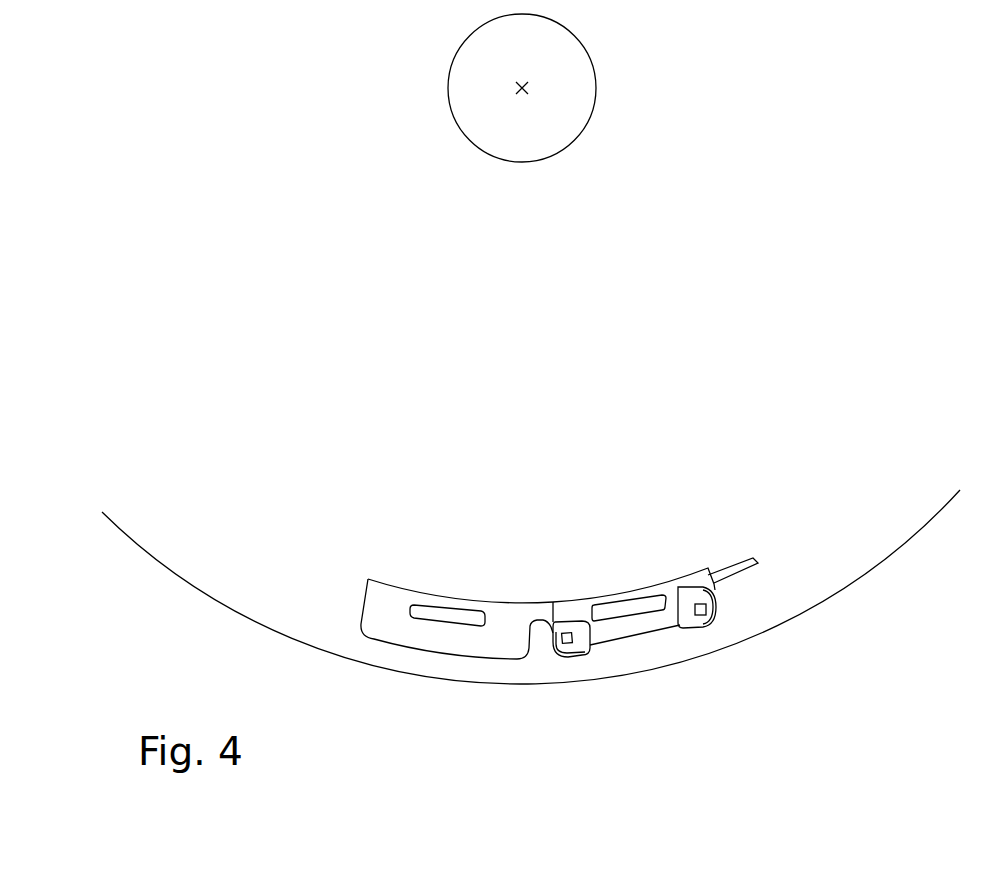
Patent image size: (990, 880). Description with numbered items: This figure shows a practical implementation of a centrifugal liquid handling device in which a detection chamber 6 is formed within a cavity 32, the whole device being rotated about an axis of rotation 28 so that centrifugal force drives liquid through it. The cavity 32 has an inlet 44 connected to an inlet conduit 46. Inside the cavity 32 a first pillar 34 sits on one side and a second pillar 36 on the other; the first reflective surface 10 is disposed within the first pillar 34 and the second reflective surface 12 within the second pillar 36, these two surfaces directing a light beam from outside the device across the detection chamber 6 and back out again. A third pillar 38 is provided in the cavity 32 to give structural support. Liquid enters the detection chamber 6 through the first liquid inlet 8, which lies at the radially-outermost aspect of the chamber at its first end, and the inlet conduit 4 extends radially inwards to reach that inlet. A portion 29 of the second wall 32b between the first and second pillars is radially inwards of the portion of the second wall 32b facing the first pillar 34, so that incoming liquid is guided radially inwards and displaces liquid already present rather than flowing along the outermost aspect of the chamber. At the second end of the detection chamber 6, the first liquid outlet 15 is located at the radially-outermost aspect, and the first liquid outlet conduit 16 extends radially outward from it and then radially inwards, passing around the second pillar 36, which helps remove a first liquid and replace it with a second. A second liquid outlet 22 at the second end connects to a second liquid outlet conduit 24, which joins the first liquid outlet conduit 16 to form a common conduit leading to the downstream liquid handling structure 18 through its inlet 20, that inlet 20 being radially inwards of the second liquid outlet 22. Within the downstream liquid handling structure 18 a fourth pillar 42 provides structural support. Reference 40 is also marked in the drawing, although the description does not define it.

The inlet conduit 4 is at (716, 600).
The detection chamber 6 is at (620, 630).
The first liquid inlet 8 is at (687, 633).
The first reflective surface 10 is at (717, 610).
The second reflective surface 12 is at (567, 638).
The first liquid outlet 15 is at (593, 655).
The first liquid outlet conduit 16 is at (577, 653).
The downstream liquid handling structure 18 is at (363, 602).
The inlet 20 is at (522, 612).
The second liquid outlet 22 is at (584, 610).
The second liquid outlet conduit 24 is at (567, 611).
The axis of rotation 28 is at (530, 88).
The portion of the second wall 29 is at (652, 641).
The cavity 32 is at (685, 570).
The second wall 32b is at (690, 630).
The first pillar 34 is at (712, 618).
The second pillar 36 is at (560, 637).
The third pillar 38 is at (638, 604).
The guide 40 is at (627, 597).
The fourth pillar 42 is at (417, 605).
The inlet 44 is at (715, 580).
The inlet conduit 46 is at (750, 558).